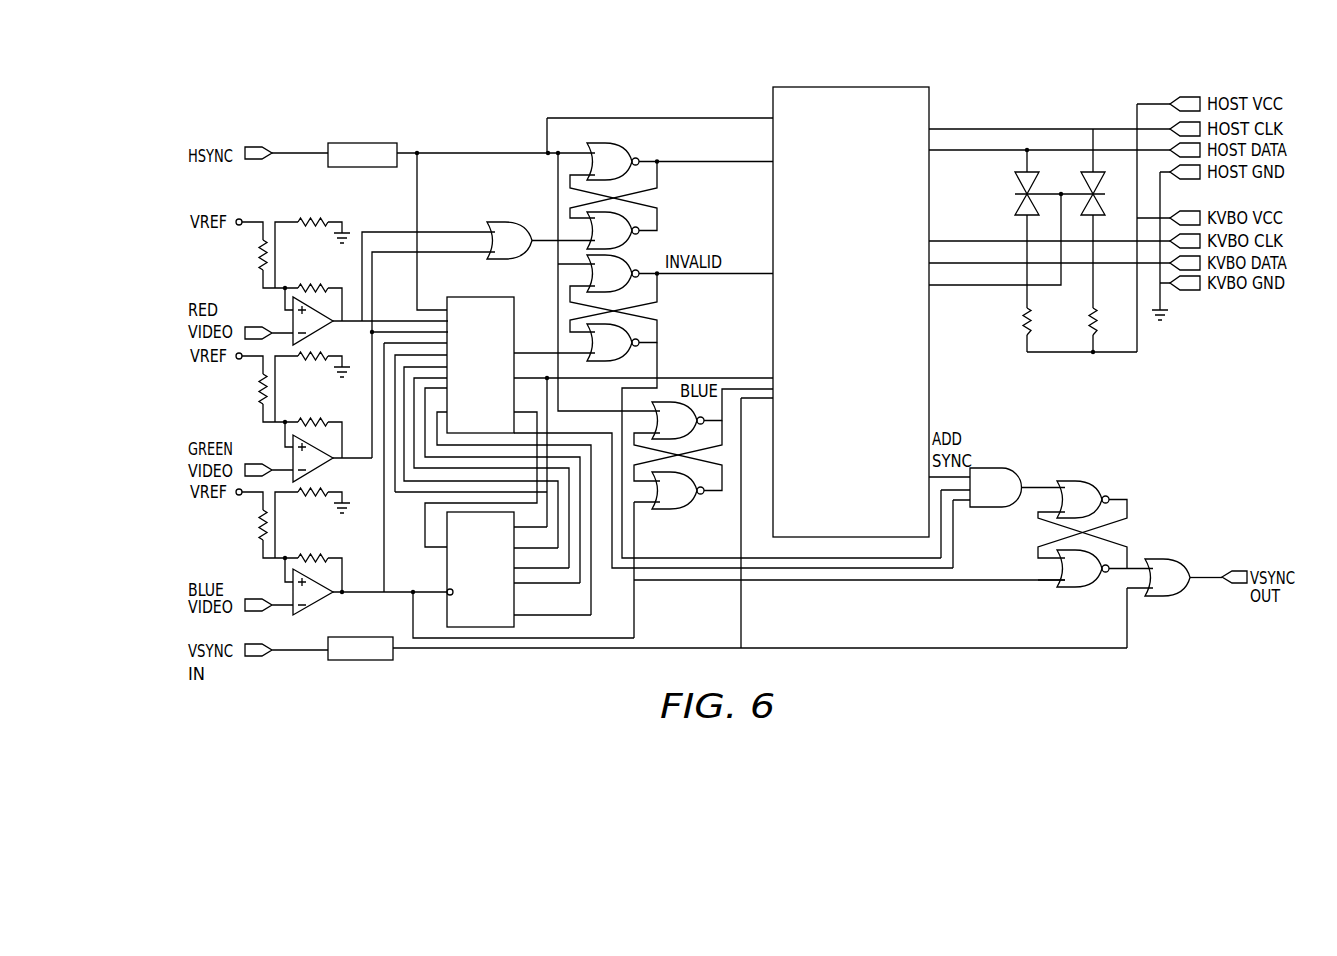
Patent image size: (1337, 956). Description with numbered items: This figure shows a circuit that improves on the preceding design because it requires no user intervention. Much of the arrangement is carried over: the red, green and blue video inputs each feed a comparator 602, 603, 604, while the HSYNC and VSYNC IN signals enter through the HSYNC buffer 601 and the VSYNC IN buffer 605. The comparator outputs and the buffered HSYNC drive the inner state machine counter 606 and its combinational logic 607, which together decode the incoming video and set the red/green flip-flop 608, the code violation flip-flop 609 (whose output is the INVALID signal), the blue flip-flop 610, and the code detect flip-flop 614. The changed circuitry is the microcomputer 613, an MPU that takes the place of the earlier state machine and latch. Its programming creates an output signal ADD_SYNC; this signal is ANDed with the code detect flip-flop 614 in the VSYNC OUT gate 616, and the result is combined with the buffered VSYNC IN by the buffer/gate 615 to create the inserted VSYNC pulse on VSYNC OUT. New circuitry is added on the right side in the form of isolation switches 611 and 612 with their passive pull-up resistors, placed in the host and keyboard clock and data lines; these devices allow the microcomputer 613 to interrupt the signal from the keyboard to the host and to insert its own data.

The HSYNC buffer 601 is at (365, 138).
The comparator 602 is at (315, 281).
The comparator 603 is at (278, 417).
The comparator 604 is at (318, 551).
The VSYNC IN buffer 605 is at (352, 671).
The inner state machine counter 606 is at (507, 607).
The combinational logic 607 is at (468, 312).
The red/green flip-flop 608 is at (671, 157).
The code violation flip-flop 609 is at (727, 386).
The blue flip-flop 610 is at (703, 513).
The isolation switch 611 is at (1008, 220).
The isolation switch 612 is at (1077, 221).
The microcomputer 613 is at (860, 285).
The code detect flip-flop 614 is at (1095, 505).
The VSYNC OUT buffer/gate 615 is at (1187, 577).
The VSYNC OUT gate 616 is at (997, 520).